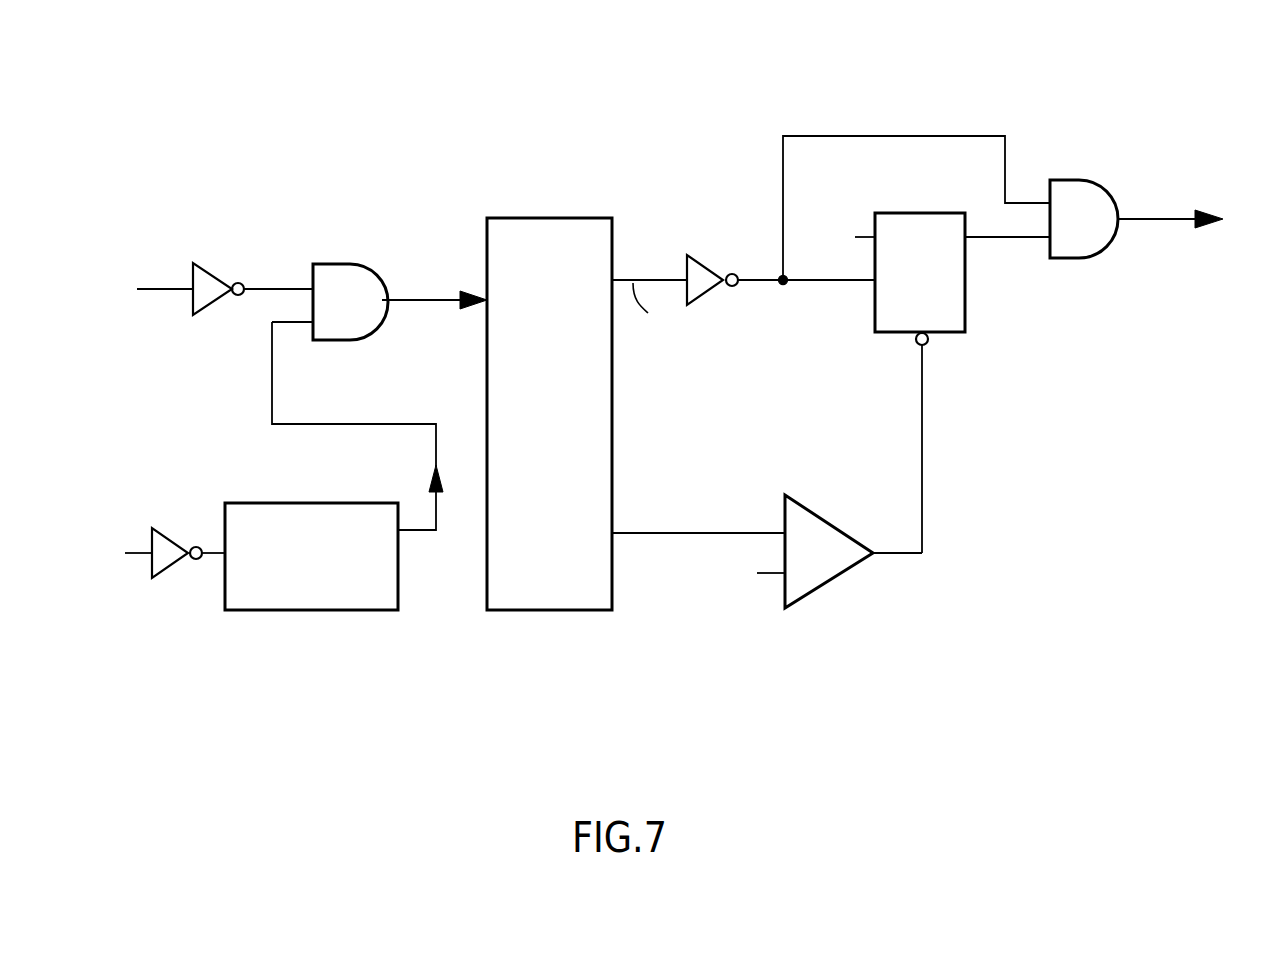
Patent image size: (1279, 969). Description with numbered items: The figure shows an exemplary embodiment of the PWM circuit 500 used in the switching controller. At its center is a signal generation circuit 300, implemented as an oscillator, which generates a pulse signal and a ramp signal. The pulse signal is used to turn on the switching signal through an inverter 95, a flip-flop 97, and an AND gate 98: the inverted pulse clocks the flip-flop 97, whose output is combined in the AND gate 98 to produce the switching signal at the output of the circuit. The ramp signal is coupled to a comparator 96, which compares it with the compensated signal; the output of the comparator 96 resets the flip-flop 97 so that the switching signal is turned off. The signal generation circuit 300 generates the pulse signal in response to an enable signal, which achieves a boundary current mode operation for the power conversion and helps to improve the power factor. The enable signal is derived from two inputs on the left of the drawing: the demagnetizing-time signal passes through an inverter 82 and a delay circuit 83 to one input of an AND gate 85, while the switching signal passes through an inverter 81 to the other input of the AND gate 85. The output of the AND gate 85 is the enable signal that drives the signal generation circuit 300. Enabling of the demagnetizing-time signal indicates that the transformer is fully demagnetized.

The PWM circuit 500 is at (1273, 100).
The inverter 81 is at (217, 272).
The inverter 82 is at (174, 535).
The delay circuit 83 is at (311, 537).
The AND gate 85 is at (336, 264).
The signal generation circuit 300 is at (567, 218).
The inverter 95 is at (712, 264).
The comparator 96 is at (830, 520).
The flip-flop 97 is at (910, 213).
The AND gate 98 is at (1084, 201).